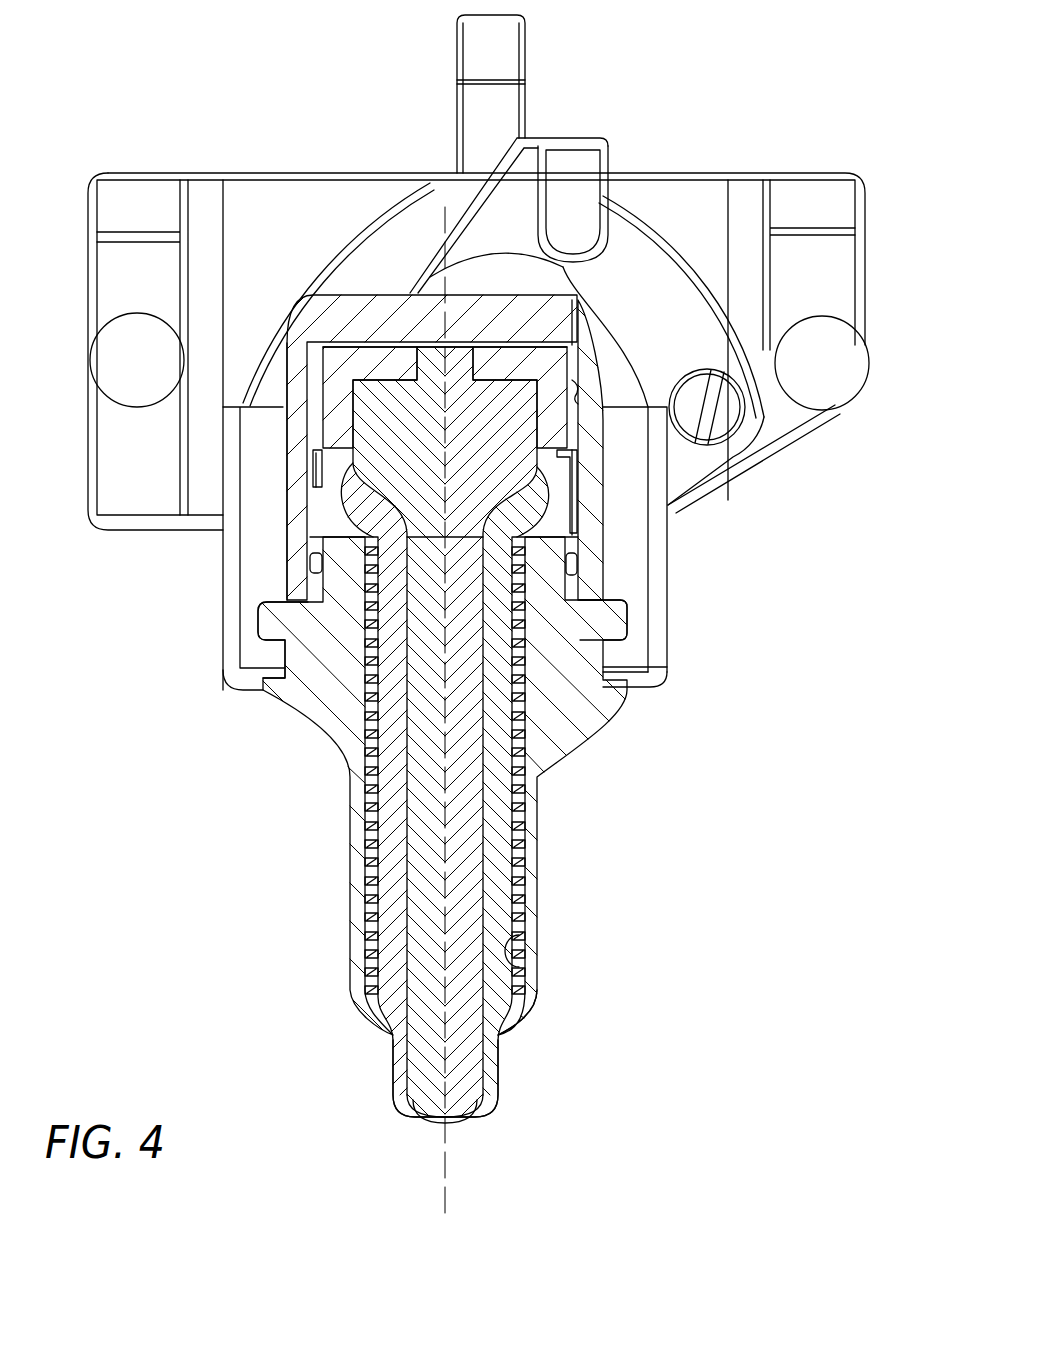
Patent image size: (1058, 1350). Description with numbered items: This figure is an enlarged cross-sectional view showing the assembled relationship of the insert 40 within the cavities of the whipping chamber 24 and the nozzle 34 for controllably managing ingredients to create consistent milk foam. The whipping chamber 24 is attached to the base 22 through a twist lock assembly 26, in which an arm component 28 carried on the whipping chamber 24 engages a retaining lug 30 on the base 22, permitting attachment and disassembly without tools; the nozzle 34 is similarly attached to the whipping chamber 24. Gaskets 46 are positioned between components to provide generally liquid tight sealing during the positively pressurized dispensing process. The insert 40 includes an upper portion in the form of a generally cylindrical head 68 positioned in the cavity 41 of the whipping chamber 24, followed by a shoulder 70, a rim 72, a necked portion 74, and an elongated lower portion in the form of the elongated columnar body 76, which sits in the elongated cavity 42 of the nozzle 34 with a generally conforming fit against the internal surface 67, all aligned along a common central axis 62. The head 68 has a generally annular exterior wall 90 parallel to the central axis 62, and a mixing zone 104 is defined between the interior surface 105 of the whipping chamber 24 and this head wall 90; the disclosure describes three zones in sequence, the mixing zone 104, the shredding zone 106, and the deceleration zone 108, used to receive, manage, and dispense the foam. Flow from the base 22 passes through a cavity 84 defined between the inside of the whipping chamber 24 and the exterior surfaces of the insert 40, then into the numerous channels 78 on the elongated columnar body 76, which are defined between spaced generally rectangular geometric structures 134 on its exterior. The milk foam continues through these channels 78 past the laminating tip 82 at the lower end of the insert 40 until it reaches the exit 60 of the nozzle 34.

The base 22 is at (288, 165).
The whipping chamber 24 is at (272, 360).
The twist lock assembly 26 is at (548, 130).
The arm component 28 is at (520, 173).
The retaining lug 30 is at (580, 170).
The nozzle 34 is at (342, 968).
The insert 40 is at (533, 917).
The cavity 41 is at (318, 372).
The elongated cavity 42 is at (527, 535).
The gaskets 46 is at (632, 655).
The exit 60 is at (468, 1118).
The central axis 62 is at (447, 1028).
The internal surface 67 is at (505, 962).
The head 68 is at (368, 352).
The shoulder 70 is at (318, 480).
The rim 72 is at (577, 473).
The necked portion 74 is at (555, 522).
The elongated columnar body 76 is at (465, 838).
The channels 78 is at (372, 806).
The laminating tip 82 is at (438, 1105).
The cavity 84 is at (345, 525).
The annular exterior wall 90 is at (600, 407).
The mixing zone 104 is at (320, 370).
The interior surface 105 is at (577, 396).
The shredding zone 106 is at (577, 340).
The deceleration zone 108 is at (535, 810).
The geometric structures 134 is at (370, 856).